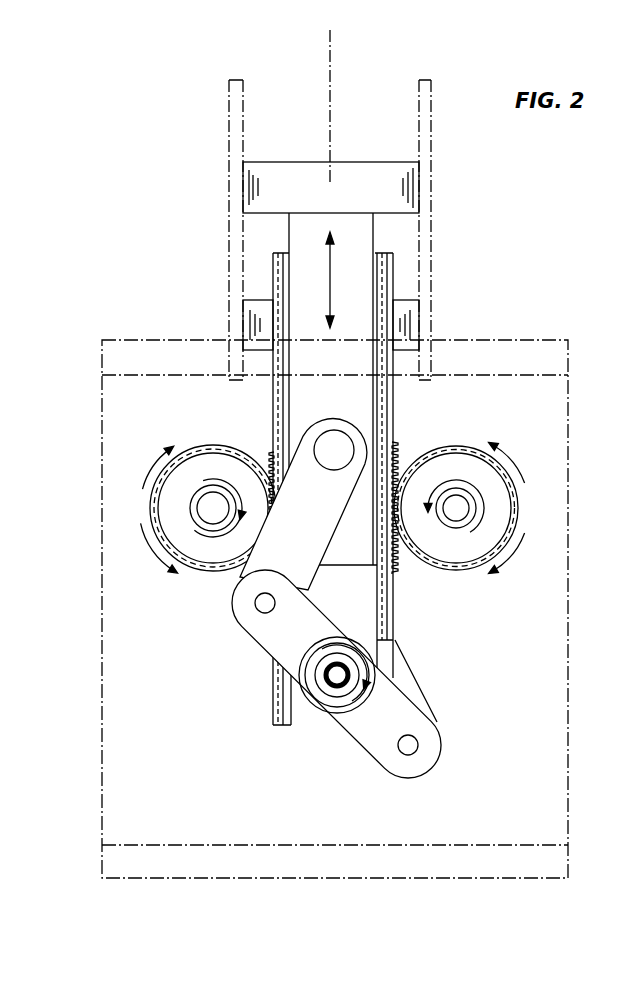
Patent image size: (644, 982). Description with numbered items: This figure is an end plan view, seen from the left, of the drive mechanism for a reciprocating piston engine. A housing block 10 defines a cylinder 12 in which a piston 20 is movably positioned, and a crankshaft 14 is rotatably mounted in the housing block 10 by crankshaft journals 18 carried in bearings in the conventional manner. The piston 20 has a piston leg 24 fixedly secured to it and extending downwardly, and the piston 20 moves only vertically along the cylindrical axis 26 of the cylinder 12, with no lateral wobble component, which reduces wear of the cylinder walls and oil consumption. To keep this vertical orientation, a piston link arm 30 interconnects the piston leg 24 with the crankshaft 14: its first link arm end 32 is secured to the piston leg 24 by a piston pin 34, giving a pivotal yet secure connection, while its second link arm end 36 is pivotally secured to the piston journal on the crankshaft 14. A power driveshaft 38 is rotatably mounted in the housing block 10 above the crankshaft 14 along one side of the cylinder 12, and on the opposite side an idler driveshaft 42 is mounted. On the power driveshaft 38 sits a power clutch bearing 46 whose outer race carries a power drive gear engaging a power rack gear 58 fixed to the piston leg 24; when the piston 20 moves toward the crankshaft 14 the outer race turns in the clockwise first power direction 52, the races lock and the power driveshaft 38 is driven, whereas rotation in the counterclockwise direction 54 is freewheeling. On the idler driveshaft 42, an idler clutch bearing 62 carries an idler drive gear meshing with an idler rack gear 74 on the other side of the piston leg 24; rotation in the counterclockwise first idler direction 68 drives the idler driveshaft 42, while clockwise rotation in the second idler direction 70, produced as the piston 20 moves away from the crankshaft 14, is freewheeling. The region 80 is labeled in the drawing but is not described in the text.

The housing block 10 is at (568, 402).
The cylinder 12 is at (232, 142).
The crankshaft 14 is at (330, 680).
The crankshaft journal 18 is at (375, 685).
The piston 20 is at (380, 188).
The piston leg 24 is at (360, 233).
The cylindrical axis 26 is at (329, 80).
The piston link arm 30 is at (358, 438).
The first link arm end 32 is at (348, 420).
The piston pin 34 is at (460, 478).
The second link arm end 36 is at (240, 573).
The power driveshaft 38 is at (197, 507).
The idler driveshaft 42 is at (460, 513).
The power clutch bearing 46 is at (187, 508).
The first power direction 52 is at (158, 460).
The counterclockwise direction 54 is at (155, 553).
The power rack gear 58 is at (275, 362).
The idler clutch bearing 62 is at (475, 500).
The first idler direction 68 is at (515, 462).
The second idler direction 70 is at (515, 552).
The idler rack gear 74 is at (392, 288).
The stroke region 80 is at (306, 126).